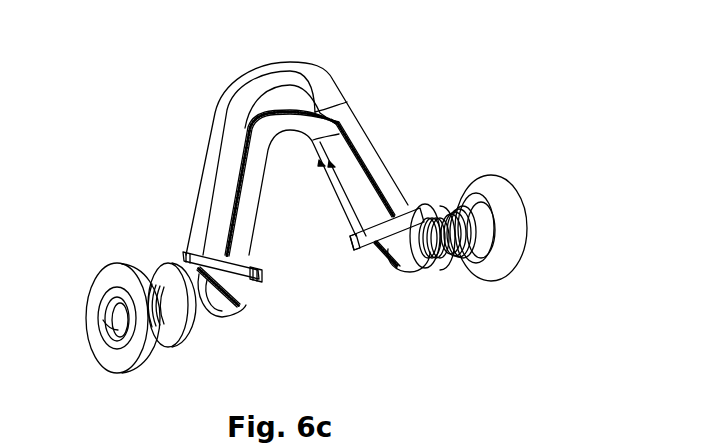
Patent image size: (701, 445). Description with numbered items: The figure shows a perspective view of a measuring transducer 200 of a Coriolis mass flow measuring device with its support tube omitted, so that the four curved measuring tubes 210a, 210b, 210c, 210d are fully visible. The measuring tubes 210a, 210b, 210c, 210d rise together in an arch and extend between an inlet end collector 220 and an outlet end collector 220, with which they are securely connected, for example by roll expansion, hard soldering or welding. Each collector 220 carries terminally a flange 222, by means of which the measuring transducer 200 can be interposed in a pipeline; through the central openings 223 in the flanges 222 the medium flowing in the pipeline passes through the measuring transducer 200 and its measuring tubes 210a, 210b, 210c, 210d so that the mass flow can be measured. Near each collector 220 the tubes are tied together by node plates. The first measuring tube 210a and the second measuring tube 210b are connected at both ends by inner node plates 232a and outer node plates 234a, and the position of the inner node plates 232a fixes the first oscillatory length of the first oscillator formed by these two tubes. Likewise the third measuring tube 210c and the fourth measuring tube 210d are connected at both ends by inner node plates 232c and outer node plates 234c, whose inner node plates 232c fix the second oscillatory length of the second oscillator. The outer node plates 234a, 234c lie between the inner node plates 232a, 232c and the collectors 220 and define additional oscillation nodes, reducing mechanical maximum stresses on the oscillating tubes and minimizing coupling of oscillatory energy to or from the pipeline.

The measuring transducer 200 is at (101, 88).
The first measuring tube 210a is at (219, 193).
The second measuring tube 210b is at (216, 157).
The third measuring tube 210c is at (262, 138).
The fourth measuring tube 210d is at (260, 112).
The collector 220 is at (160, 272).
The flange 222 is at (113, 277).
The central opening 223 is at (108, 325).
The inner node plate 232a is at (187, 254).
The inner node plate 232c is at (258, 277).
The outer node plate 234a is at (220, 318).
The outer node plate 234c is at (240, 306).